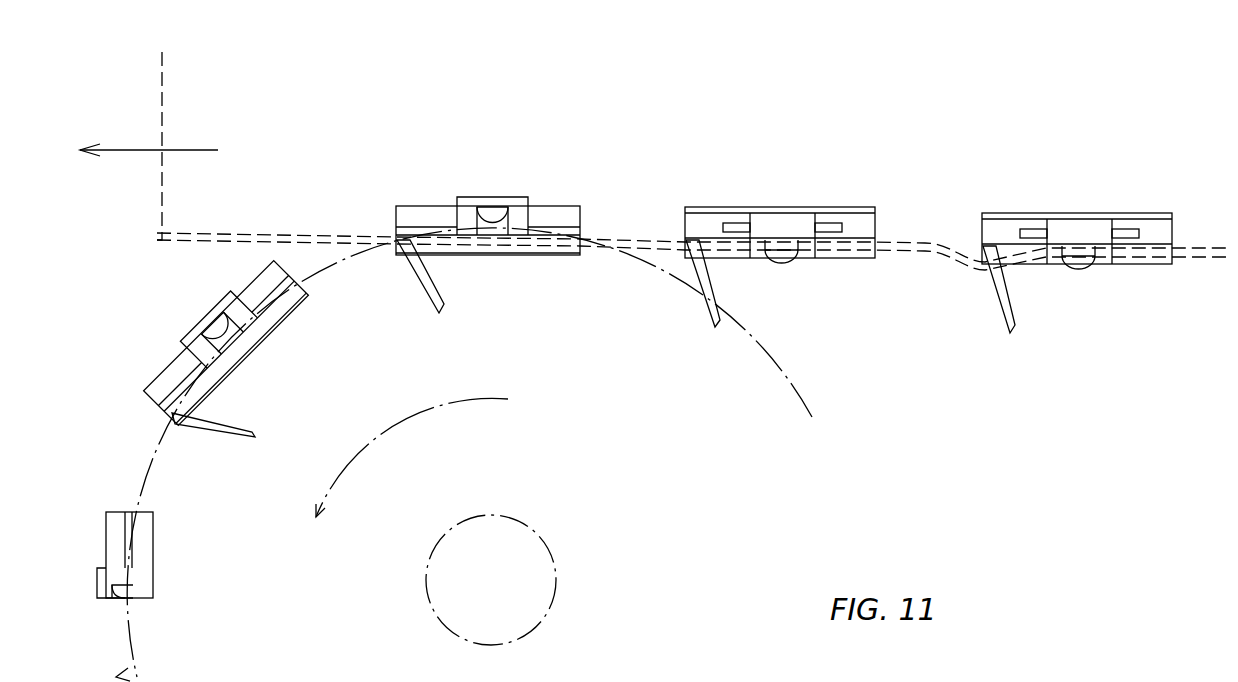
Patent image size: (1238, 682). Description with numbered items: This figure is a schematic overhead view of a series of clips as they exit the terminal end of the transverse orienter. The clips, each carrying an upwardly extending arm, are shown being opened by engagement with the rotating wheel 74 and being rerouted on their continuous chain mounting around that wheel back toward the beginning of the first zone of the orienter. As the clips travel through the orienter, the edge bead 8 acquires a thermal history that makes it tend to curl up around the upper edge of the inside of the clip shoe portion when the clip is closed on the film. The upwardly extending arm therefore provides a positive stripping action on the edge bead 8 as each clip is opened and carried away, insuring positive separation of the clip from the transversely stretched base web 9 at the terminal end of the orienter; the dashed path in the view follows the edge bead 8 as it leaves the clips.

The edge bead 8 is at (207, 243).
The transversely stretched base web 9 is at (629, 142).
The wheel 74 is at (795, 385).